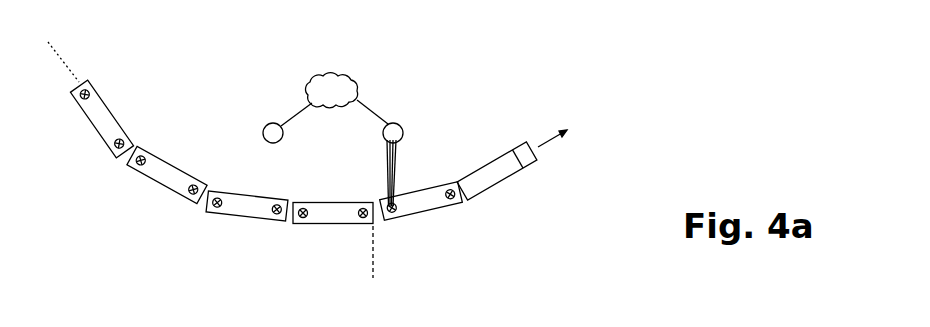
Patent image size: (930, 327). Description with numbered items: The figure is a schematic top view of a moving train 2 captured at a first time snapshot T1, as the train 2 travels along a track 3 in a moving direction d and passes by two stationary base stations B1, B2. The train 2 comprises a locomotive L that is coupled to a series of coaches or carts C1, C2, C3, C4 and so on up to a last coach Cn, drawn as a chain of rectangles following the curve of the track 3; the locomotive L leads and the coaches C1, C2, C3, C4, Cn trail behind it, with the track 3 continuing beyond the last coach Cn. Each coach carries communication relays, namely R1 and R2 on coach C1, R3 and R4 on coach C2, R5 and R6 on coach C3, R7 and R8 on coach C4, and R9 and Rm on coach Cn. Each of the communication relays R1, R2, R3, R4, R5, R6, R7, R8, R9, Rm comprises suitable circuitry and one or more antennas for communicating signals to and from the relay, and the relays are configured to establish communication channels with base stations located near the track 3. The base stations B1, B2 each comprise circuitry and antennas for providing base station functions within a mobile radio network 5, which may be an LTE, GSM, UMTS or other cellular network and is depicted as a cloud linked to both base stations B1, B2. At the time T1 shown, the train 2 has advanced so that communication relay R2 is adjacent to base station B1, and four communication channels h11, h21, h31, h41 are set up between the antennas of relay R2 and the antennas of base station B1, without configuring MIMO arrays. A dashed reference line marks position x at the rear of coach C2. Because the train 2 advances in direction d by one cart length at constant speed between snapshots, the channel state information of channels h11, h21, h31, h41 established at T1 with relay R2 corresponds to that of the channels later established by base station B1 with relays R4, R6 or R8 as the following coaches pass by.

The train 2 is at (330, 250).
The track 3 is at (74, 53).
The mobile radio network 5 is at (359, 85).
The base station B1 is at (381, 121).
The base station B2 is at (287, 123).
The communication channel h11 is at (386, 159).
The communication channel h21 is at (388, 176).
The communication channel h31 is at (397, 160).
The communication channel h41 is at (395, 177).
The locomotive L is at (497, 171).
The moving direction d is at (552, 135).
The position x is at (373, 261).
The time T1 is at (586, 224).
The coach C1 is at (423, 210).
The coach C2 is at (333, 223).
The coach C3 is at (246, 215).
The coach C4 is at (162, 183).
The coach Cn is at (93, 124).
The communication relay R1 is at (453, 215).
The communication relay R2 is at (399, 228).
The communication relay R3 is at (361, 234).
The communication relay R4 is at (305, 234).
The communication relay R5 is at (273, 230).
The communication relay R6 is at (217, 224).
The communication relay R7 is at (181, 206).
The communication relay R8 is at (132, 179).
The communication relay R9 is at (101, 154).
The communication relay Rm is at (68, 108).